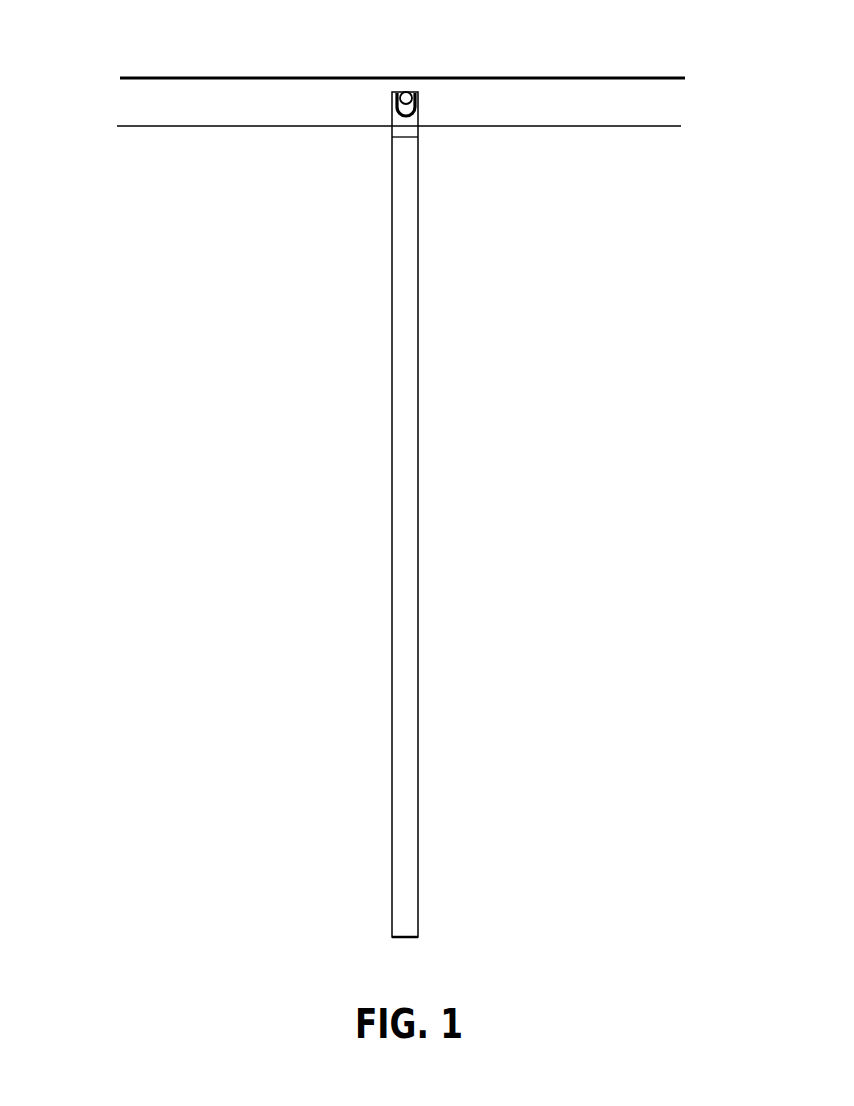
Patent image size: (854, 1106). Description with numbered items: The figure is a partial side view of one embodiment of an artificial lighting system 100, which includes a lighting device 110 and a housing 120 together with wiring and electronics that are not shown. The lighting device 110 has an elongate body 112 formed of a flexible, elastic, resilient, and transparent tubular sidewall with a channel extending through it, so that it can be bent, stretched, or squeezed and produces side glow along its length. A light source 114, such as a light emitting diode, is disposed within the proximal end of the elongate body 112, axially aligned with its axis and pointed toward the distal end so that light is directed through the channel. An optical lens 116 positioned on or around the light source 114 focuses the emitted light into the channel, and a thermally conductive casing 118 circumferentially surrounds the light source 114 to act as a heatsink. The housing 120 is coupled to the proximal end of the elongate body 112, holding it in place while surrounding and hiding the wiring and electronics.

The lighting system 100 is at (299, 481).
The lighting device 110 is at (418, 481).
The elongate body 112 is at (413, 536).
The light source 114 is at (408, 92).
The optical lens 116 is at (398, 108).
The thermally conductive casing 118 is at (410, 133).
The housing 120 is at (162, 103).